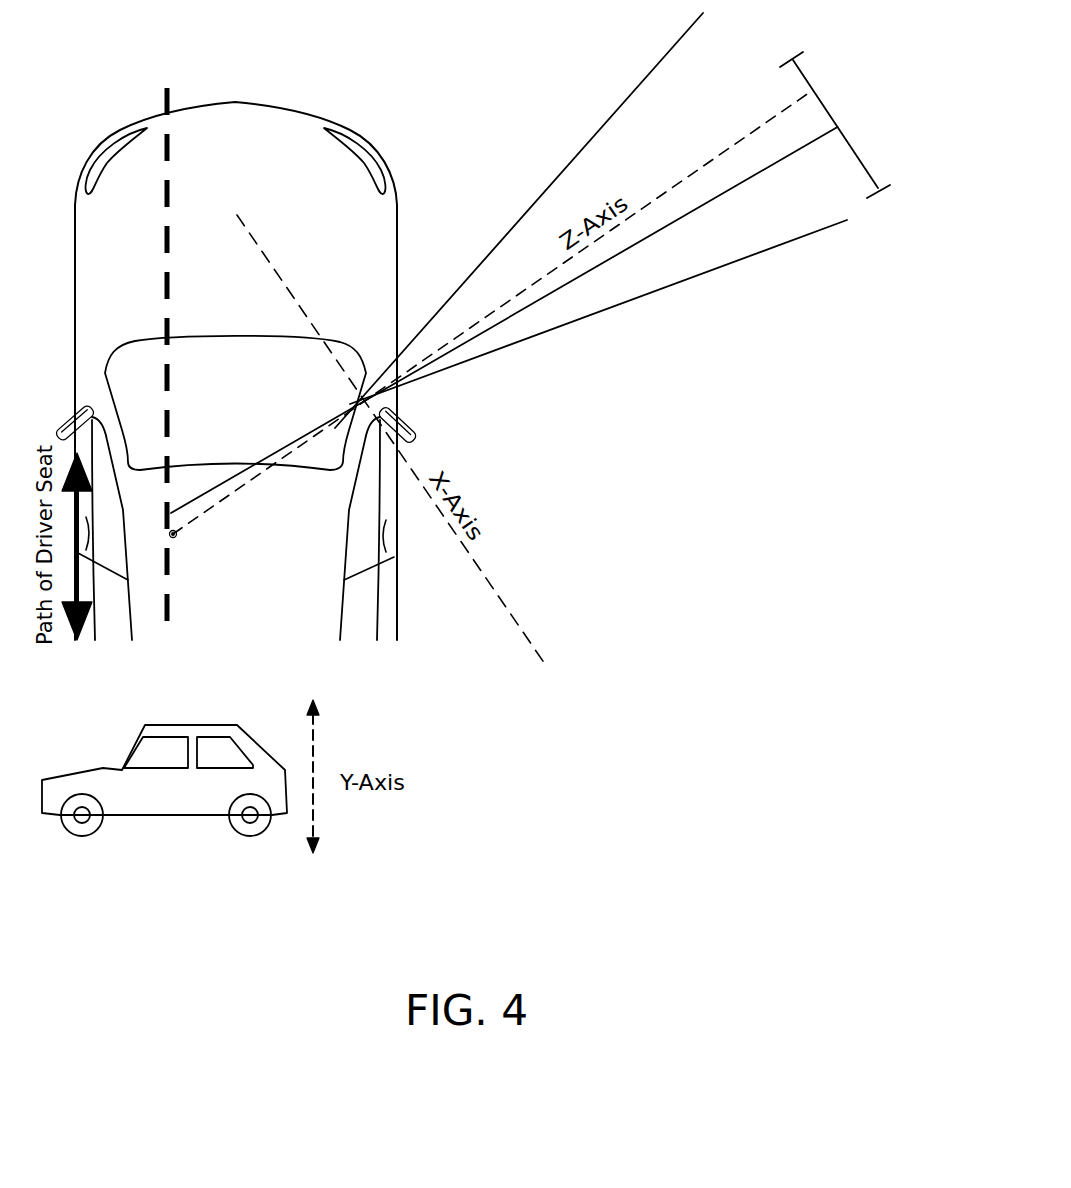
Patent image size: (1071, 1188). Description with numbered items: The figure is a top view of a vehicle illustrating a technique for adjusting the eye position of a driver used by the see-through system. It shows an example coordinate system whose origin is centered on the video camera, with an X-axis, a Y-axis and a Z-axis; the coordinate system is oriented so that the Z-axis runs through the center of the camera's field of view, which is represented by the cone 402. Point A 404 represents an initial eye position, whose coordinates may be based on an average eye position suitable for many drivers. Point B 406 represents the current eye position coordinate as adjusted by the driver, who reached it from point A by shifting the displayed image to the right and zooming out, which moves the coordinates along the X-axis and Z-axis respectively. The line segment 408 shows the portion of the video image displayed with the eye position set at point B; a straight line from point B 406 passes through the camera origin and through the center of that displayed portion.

The cone 402 is at (695, 280).
The point A 404 is at (177, 542).
The point B 406 is at (175, 508).
The line segment 408 is at (865, 114).